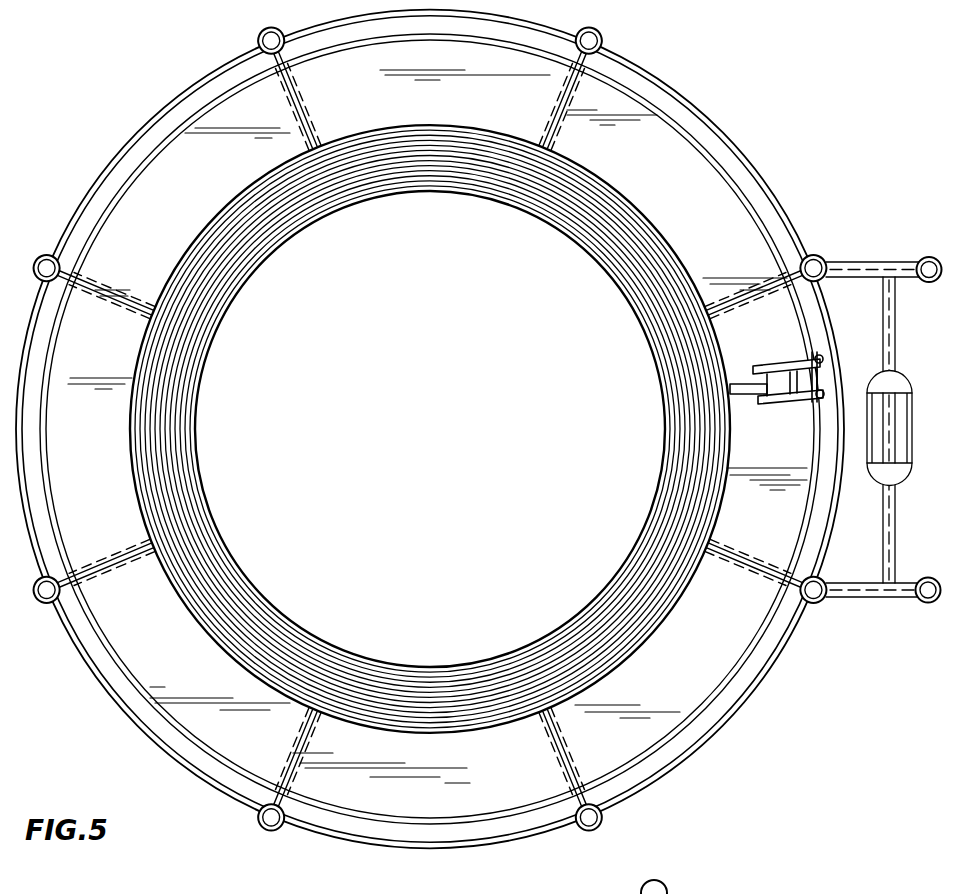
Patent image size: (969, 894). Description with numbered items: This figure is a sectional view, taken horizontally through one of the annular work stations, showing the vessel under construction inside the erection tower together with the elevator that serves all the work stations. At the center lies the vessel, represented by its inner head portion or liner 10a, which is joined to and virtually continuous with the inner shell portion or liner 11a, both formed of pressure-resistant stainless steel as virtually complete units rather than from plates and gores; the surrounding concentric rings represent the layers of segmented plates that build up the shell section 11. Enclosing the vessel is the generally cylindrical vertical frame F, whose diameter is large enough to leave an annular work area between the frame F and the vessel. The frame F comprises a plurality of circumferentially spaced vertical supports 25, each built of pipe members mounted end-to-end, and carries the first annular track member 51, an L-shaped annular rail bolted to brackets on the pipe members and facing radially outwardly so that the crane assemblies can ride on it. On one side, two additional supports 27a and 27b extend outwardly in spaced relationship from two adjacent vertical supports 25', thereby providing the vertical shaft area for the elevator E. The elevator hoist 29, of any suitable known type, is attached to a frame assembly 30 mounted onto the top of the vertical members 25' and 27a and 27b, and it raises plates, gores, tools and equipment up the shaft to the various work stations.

The cylindrical vertical frame F is at (172, 95).
The first annular track member 51 is at (722, 150).
The vertical supports 25 is at (387, 454).
The adjacent vertical supports 25' is at (810, 442).
The elevator E is at (855, 288).
The additional support 27a is at (927, 603).
The additional support 27b is at (930, 257).
The elevator hoist 29 is at (875, 485).
The frame assembly 30 is at (863, 598).
The inner head portion or liner 10a is at (404, 414).
The shell section 11 is at (278, 685).
The inner shell portion or liner 11a is at (363, 655).